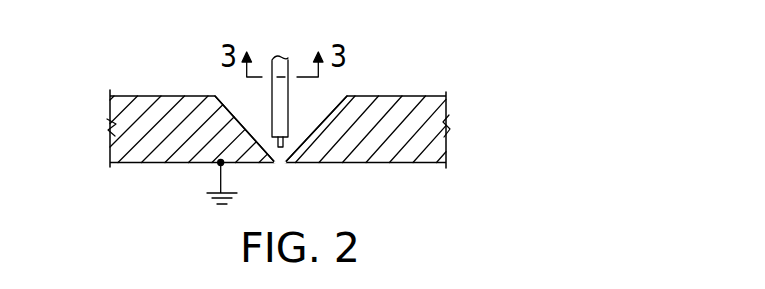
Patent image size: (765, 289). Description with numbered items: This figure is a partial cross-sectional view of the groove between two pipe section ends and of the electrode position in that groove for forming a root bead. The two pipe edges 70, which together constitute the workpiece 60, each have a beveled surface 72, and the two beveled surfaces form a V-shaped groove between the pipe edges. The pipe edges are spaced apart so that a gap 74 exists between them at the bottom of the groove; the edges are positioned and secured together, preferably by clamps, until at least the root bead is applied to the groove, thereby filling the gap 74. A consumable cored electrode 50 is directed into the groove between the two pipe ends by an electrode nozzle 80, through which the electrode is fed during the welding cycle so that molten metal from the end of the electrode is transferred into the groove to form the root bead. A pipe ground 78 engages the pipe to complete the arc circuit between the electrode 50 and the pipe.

The consumable cored electrode 50 is at (285, 142).
The workpiece 60 is at (238, 88).
The pipe edges 70 is at (134, 94).
The beveled surface 72 is at (260, 86).
The gap 74 is at (279, 157).
The pipe ground 78 is at (208, 202).
The electrode nozzle 80 is at (271, 61).